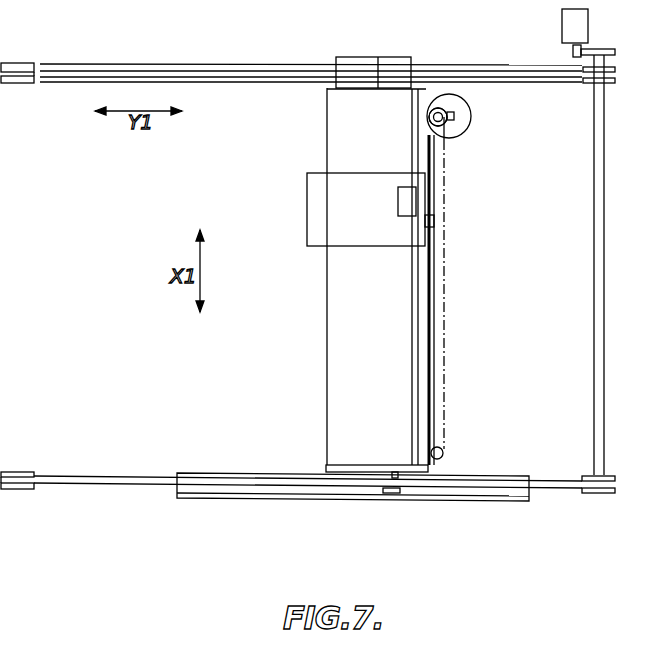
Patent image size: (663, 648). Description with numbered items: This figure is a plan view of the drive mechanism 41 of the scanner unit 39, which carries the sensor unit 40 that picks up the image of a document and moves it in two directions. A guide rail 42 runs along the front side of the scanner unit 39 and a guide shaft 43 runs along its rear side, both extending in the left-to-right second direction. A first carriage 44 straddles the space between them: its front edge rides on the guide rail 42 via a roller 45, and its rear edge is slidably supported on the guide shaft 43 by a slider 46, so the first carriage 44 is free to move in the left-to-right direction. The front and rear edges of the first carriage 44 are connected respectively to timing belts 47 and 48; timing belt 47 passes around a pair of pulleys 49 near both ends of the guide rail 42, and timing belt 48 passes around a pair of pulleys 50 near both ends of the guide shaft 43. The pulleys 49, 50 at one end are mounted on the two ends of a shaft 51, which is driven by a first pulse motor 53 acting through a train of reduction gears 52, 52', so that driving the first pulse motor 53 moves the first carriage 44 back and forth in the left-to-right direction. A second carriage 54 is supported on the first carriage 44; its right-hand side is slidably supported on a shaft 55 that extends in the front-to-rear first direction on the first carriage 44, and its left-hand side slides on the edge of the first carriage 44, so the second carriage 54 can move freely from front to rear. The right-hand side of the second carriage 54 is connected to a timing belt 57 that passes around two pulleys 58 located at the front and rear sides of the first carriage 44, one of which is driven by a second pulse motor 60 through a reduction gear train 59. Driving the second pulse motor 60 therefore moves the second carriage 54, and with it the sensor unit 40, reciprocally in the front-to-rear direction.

The scanner unit 39 is at (343, 297).
The sensor unit 40 is at (410, 203).
The drive mechanism 41 is at (452, 300).
The guide rail 42 is at (232, 501).
The guide shaft 43 is at (233, 65).
The first carriage 44 is at (342, 355).
The roller 45 is at (398, 495).
The slider 46 is at (353, 57).
The timing belt 47 is at (128, 486).
The timing belt 48 is at (133, 72).
The pulleys 49 is at (27, 490).
The pulleys 50 is at (22, 62).
The shaft 51 is at (605, 300).
The reduction gear 52 is at (609, 31).
The reduction gear 52' is at (549, 44).
The first pulse motor 53 is at (562, 20).
The second carriage 54 is at (307, 205).
The shaft 55 is at (414, 370).
The timing belt 57 is at (457, 250).
The pulleys 58 is at (458, 138).
The reduction gear train 59 is at (449, 110).
The second pulse motor 60 is at (466, 126).